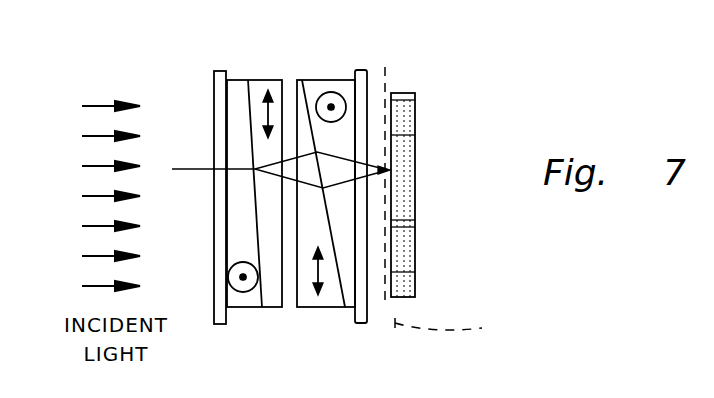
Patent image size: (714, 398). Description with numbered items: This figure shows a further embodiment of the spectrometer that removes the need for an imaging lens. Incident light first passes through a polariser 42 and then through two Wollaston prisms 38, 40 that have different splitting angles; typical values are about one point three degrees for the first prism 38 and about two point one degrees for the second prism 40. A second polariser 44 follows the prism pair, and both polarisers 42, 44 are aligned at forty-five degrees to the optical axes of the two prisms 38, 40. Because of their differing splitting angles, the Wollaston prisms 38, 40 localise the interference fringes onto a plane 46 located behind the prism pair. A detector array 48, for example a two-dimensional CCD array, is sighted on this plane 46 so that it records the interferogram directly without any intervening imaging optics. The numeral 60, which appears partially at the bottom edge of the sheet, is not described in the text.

The first Wollaston prism 38 is at (240, 80).
The second Wollaston prism 40 is at (328, 80).
The polariser 42 is at (220, 325).
The polariser 44 is at (357, 324).
The plane 46 is at (451, 201).
The detector array 48 is at (415, 240).
The reference numeral (partially visible) 60 is at (575, 391).